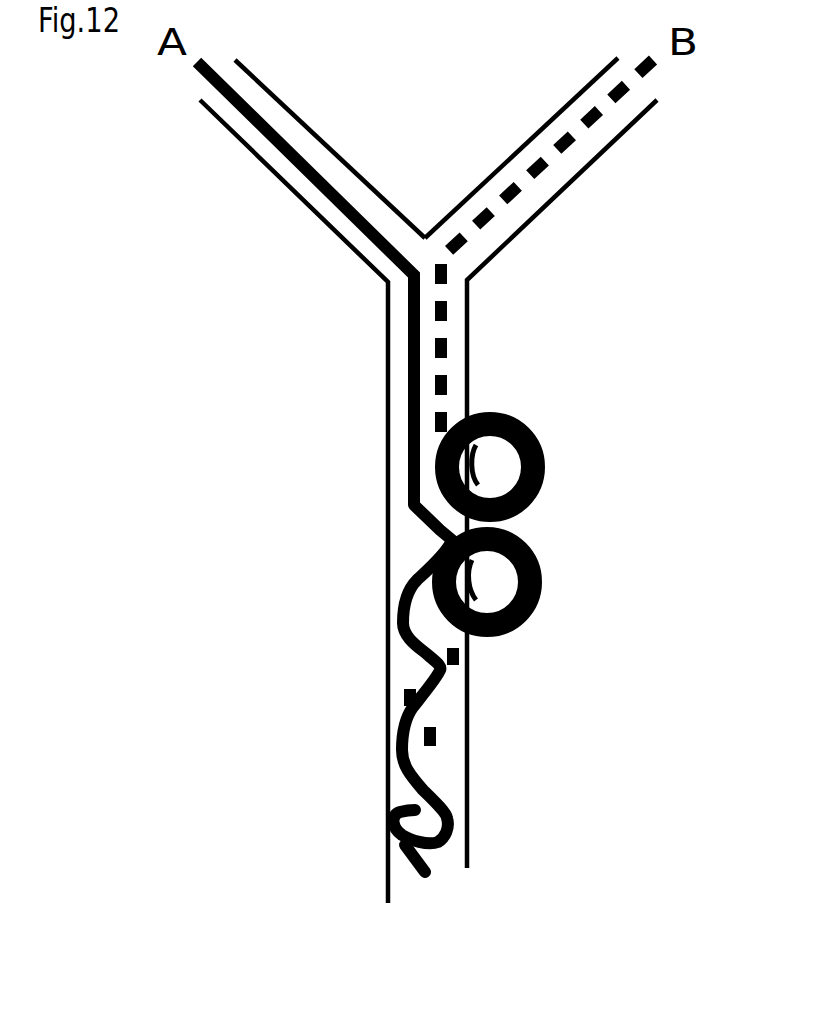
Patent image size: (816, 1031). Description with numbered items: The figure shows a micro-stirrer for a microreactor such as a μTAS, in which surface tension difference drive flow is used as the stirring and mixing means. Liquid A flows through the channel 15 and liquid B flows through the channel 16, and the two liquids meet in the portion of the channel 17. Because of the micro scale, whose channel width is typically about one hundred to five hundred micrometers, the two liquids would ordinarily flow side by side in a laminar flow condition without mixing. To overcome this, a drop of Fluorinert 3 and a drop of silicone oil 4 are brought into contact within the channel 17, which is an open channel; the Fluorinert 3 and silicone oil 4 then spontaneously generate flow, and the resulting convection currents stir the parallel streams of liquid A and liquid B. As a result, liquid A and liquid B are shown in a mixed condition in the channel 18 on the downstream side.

The channel 15 is at (303, 205).
The channel 16 is at (547, 203).
The channel 17 is at (430, 333).
The Fluorinert 3 is at (547, 468).
The silicone oil 4 is at (547, 570).
The channel 18 is at (442, 748).